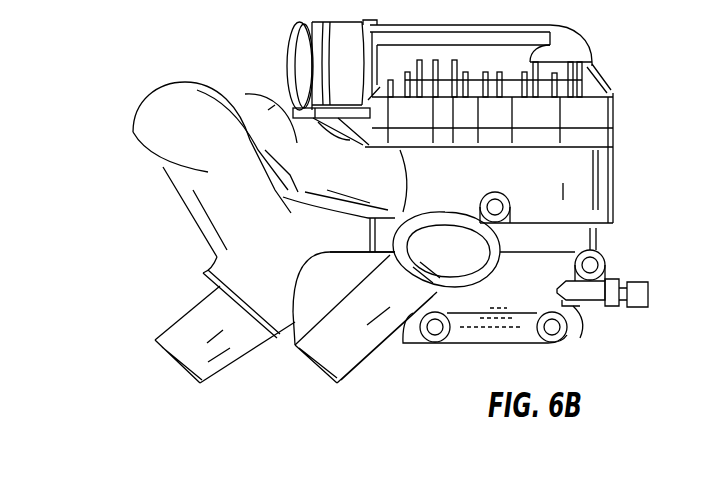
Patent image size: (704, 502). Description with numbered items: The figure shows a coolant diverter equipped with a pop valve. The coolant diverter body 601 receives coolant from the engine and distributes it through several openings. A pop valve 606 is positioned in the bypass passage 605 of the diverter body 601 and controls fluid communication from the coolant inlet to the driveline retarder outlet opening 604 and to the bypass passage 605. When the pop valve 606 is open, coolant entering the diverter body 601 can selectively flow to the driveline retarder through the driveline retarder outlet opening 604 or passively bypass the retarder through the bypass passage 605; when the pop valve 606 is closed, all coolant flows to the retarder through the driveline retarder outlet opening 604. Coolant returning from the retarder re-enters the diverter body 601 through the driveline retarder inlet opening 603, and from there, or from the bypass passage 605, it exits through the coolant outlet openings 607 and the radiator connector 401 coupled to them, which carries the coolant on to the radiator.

The radiator connector 401 is at (383, 62).
The coolant diverter body 601 is at (600, 338).
The driveline retarder inlet opening 603 is at (253, 115).
The driveline retarder outlet opening 604 is at (160, 165).
The bypass passage 605 is at (293, 248).
The pop valve 606 is at (212, 348).
The coolant outlet openings 607 is at (527, 137).